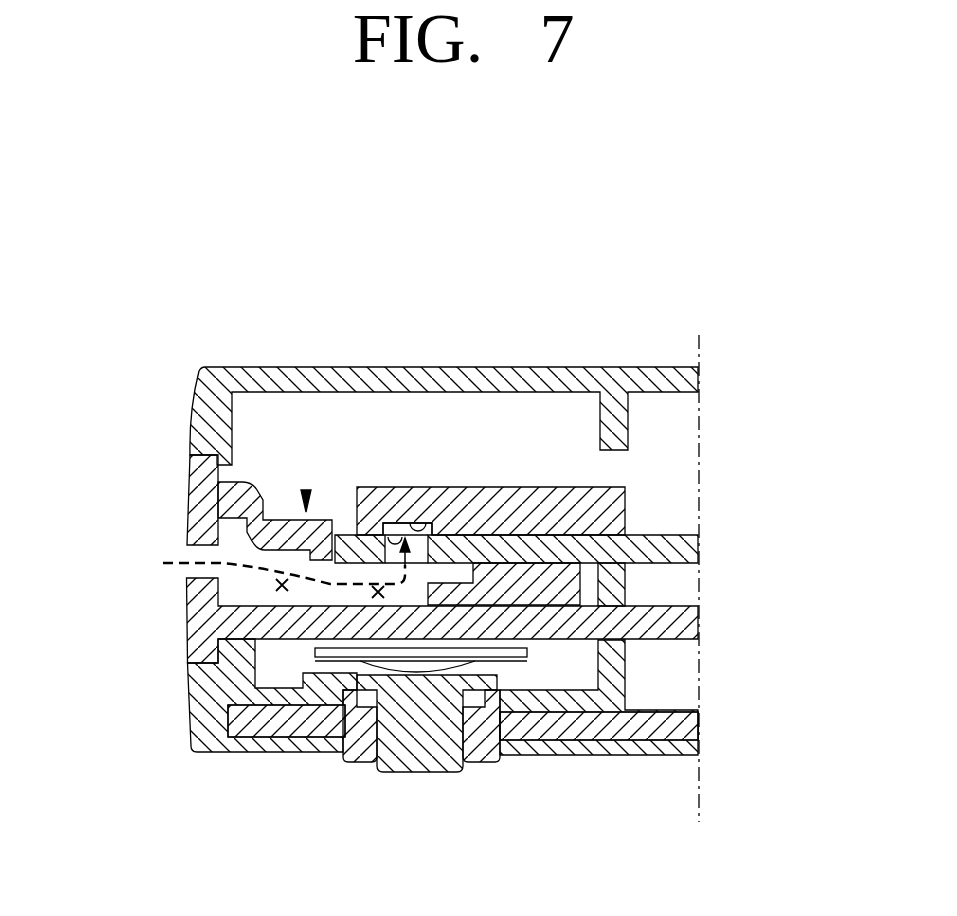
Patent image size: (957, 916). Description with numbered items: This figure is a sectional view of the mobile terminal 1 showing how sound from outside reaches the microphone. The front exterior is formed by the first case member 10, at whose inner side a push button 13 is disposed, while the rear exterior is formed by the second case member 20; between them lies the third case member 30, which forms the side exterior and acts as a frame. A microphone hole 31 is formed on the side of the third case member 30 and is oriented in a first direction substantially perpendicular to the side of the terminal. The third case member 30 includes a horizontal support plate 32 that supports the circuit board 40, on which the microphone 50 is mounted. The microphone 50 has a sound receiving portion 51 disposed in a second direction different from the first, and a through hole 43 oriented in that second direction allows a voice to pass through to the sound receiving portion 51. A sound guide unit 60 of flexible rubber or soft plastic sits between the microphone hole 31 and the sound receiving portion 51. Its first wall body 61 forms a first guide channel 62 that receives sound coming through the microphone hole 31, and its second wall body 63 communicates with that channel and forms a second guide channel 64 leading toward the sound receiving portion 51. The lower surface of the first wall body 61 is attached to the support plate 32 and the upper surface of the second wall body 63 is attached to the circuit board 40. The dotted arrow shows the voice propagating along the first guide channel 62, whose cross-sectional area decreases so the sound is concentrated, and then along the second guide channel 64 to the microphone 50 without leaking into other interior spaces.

The mobile terminal 1 is at (762, 340).
The first case member 10 is at (208, 710).
The push button 13 is at (415, 735).
The second case member 20 is at (208, 412).
The third case member 30 is at (207, 497).
The microphone hole 31 is at (185, 565).
The horizontal support plate 32 is at (300, 625).
The circuit board 40 is at (700, 547).
The through hole 43 is at (397, 530).
The microphone 50 is at (516, 503).
The sound receiving portion 51 is at (427, 535).
The sound guide unit 60 is at (306, 500).
The first wall body 61 is at (250, 522).
The first guide channel 62 is at (275, 588).
The second wall body 63 is at (548, 608).
The second guide channel 64 is at (378, 600).